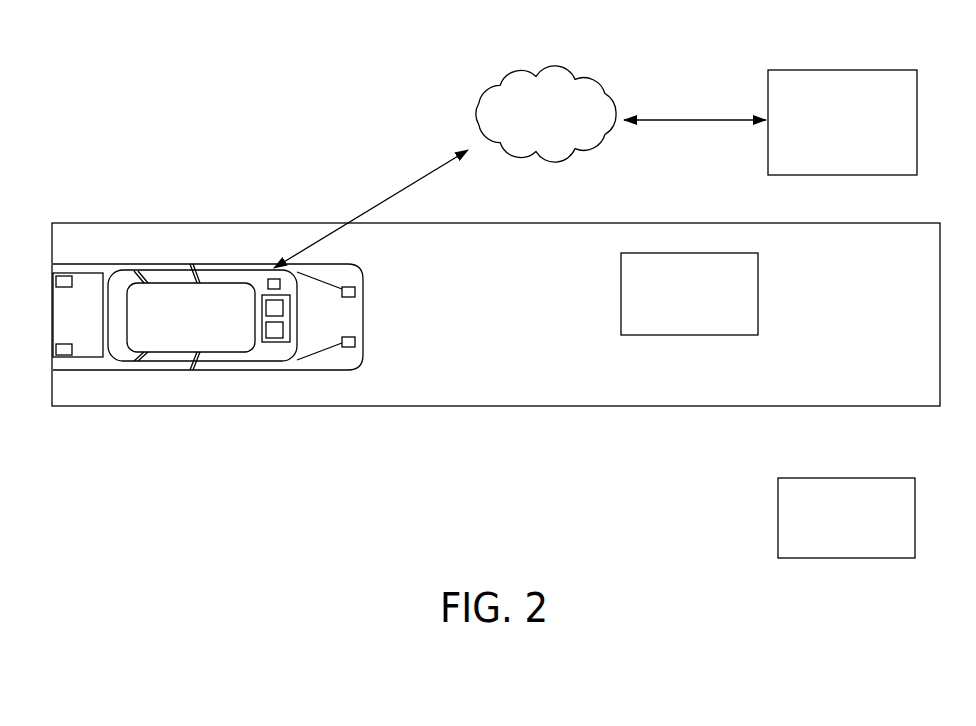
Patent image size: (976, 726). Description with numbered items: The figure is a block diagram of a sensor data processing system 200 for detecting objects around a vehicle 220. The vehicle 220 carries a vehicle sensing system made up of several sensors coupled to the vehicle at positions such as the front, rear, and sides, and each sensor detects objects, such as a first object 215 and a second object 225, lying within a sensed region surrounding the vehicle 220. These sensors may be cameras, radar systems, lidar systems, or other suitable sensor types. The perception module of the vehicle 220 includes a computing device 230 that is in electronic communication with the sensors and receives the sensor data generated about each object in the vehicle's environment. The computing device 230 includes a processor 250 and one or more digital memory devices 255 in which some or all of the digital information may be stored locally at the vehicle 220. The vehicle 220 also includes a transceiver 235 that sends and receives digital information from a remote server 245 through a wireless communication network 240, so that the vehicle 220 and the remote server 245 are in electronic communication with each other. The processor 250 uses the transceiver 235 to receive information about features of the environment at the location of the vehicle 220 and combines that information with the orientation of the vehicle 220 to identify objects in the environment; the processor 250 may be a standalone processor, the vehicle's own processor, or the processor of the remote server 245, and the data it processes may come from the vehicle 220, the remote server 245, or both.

The sensor data processing system 200 is at (198, 74).
The object 215 is at (760, 295).
The vehicle 220 is at (132, 266).
The object 225 is at (846, 476).
The computing device 230 is at (298, 300).
The transceiver 235 is at (268, 266).
The wireless communication network 240 is at (546, 70).
The remote server 245 is at (859, 68).
The processor 250 is at (271, 348).
The digital memory device 255 is at (262, 313).